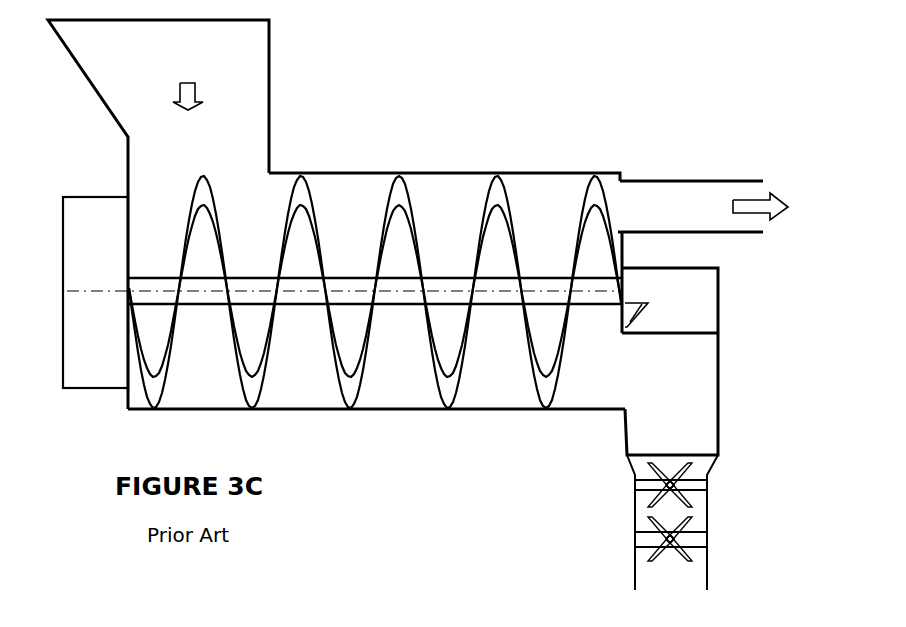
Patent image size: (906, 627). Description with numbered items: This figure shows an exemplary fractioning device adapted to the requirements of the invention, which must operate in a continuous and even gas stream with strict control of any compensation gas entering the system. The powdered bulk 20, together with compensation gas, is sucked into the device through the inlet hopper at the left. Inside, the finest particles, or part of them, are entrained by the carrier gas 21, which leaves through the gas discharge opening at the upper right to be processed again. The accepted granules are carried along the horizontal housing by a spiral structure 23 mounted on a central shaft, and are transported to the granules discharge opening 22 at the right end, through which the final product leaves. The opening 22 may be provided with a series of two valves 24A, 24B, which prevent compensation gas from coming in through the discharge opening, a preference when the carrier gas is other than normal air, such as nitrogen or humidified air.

The powdered bulk 20 is at (221, 80).
The carrier gas 21 is at (703, 206).
The granules discharge opening 22 is at (670, 429).
The spiral structure 23 is at (328, 223).
The first valve 24A is at (707, 485).
The second valve 24B is at (697, 538).